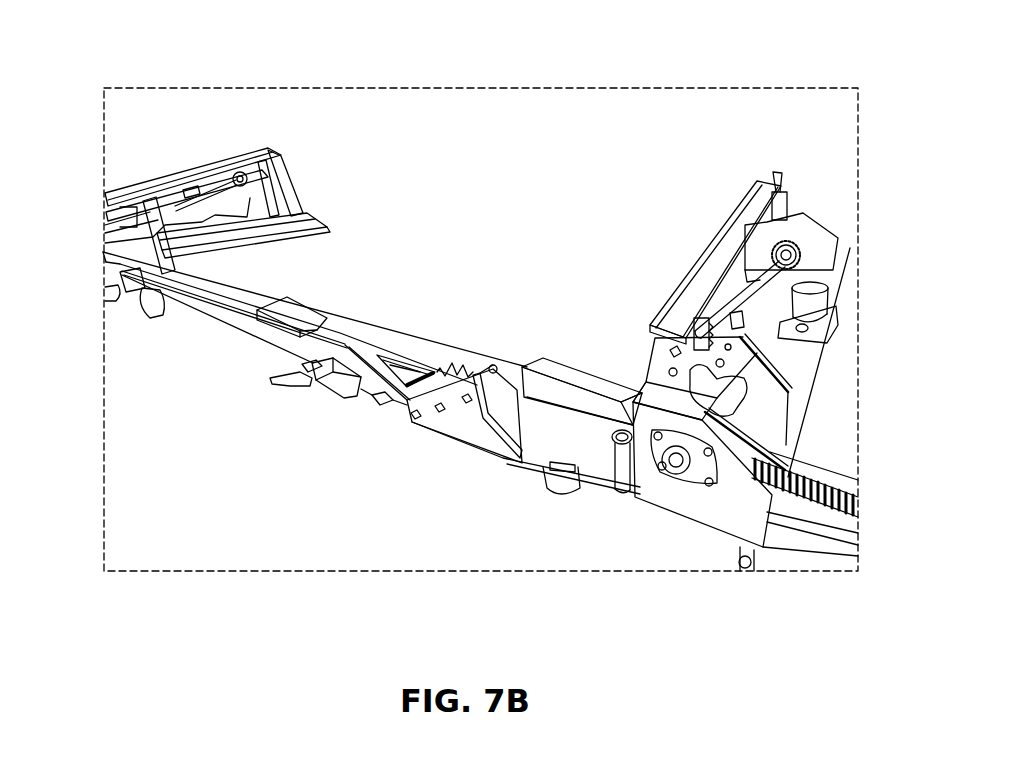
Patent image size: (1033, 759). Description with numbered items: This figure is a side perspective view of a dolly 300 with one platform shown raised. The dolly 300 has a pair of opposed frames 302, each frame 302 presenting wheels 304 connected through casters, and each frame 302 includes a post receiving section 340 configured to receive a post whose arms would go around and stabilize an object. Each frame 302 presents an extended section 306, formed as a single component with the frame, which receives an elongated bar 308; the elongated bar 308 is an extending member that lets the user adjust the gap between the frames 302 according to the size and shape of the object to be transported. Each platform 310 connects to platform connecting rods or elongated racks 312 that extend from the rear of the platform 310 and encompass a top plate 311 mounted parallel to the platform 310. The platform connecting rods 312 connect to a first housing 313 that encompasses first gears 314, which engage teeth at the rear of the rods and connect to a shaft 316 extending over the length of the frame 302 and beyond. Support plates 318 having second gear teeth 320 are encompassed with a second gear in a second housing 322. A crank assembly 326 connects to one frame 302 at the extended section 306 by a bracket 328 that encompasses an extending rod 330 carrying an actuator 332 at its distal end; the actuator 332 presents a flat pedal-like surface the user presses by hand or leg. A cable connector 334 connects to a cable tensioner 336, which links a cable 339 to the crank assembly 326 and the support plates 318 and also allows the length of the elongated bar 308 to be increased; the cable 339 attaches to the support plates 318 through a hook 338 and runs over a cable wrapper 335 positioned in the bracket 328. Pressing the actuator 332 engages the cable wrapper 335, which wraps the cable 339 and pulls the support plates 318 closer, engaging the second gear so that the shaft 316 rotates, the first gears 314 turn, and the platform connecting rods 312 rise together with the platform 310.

The dolly 300 is at (130, 50).
The frame 302 is at (822, 386).
The wheel 304 is at (158, 322).
The extended section 306 is at (585, 393).
The elongated bar 308 is at (247, 297).
The platform 310 is at (308, 229).
The top plate 311 is at (200, 175).
The platform connecting rod 312 is at (290, 178).
The first housing 313 is at (813, 228).
The first gear 314 is at (785, 257).
The shaft 316 is at (835, 268).
The support plate 318 is at (833, 518).
The second gear teeth 320 is at (802, 495).
The second housing 322 is at (695, 508).
The crank assembly 326 is at (418, 356).
The bracket 328 is at (457, 417).
The extending rod 330 is at (370, 335).
The actuator 332 is at (293, 320).
The cable connector 334 is at (392, 412).
The cable wrapper 335 is at (462, 368).
The cable tensioner 336 is at (328, 392).
The hook 338 is at (618, 500).
The cable 339 is at (540, 425).
The post receiving section 340 is at (817, 307).